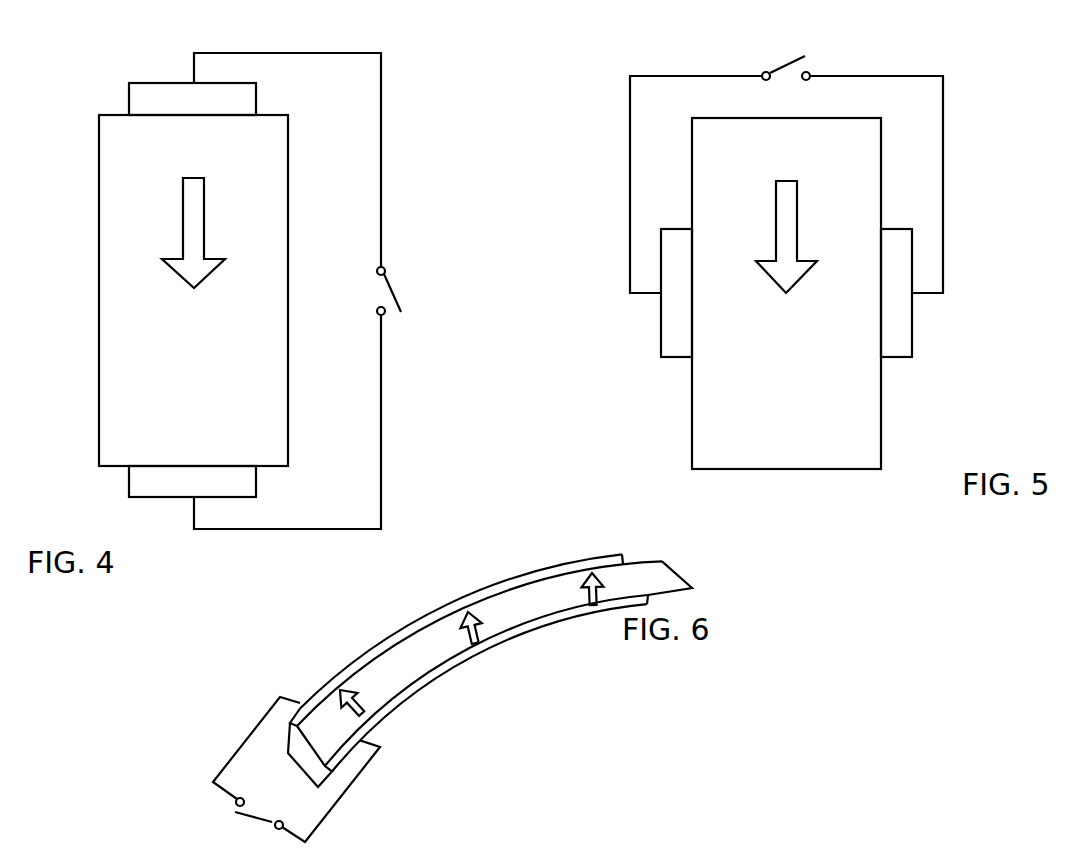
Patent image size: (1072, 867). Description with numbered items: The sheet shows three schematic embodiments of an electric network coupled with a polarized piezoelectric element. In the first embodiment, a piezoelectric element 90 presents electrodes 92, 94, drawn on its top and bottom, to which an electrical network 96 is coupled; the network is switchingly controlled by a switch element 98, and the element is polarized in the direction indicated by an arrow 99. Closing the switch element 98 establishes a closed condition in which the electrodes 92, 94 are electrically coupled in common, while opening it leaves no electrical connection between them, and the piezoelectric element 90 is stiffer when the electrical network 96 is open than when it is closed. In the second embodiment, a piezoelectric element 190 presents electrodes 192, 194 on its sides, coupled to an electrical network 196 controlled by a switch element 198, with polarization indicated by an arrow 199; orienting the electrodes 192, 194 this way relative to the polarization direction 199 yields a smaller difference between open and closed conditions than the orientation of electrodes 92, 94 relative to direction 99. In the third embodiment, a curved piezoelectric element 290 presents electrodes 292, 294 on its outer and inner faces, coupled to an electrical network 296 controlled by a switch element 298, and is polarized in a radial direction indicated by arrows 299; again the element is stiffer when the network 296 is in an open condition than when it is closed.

In FIG. 4, the piezoelectric element 90 is at (99, 208).
In FIG. 4, the electrode 92 is at (129, 96).
In FIG. 4, the electrode 94 is at (150, 498).
In FIG. 4, the electrical network 96 is at (383, 213).
In FIG. 4, the switch element 98 is at (395, 293).
In FIG. 4, the arrow 99 is at (205, 216).
In FIG. 5, the piezoelectric element 190 is at (692, 400).
In FIG. 5, the electrode 192 is at (661, 342).
In FIG. 5, the electrode 194 is at (913, 347).
In FIG. 5, the electrical network 196 is at (870, 73).
In FIG. 5, the switch element 198 is at (793, 60).
In FIG. 5, the arrow 199 is at (798, 222).
In FIG. 6, the curved piezoelectric element 290 is at (692, 589).
In FIG. 6, the electrode 292 is at (433, 610).
In FIG. 6, the electrode 294 is at (515, 637).
In FIG. 6, the electrical network 296 is at (347, 792).
In FIG. 6, the switch element 298 is at (253, 822).
In FIG. 6, the arrows 299 is at (360, 703).